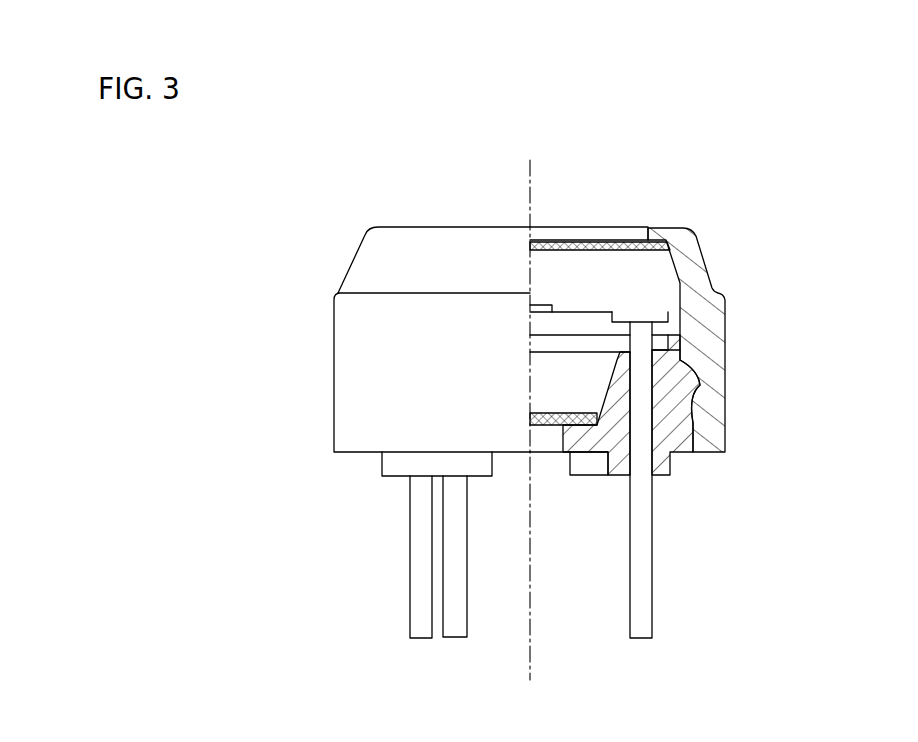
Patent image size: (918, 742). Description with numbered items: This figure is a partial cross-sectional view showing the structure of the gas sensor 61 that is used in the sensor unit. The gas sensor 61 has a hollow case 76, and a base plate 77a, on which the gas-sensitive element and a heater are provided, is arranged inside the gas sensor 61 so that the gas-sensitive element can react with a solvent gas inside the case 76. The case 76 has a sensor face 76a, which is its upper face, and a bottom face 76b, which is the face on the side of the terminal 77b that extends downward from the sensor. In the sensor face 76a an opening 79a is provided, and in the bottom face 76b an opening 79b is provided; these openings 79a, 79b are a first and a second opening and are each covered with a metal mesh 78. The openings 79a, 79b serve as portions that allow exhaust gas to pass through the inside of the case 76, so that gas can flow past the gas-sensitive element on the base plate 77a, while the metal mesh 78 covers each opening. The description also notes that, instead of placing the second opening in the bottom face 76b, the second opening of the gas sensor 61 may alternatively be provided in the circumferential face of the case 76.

The gas sensor 61 is at (697, 213).
The case 76 is at (333, 360).
The sensor face 76a is at (408, 226).
The bottom face 76b is at (347, 455).
The base plate 77a is at (540, 303).
The terminal 77b is at (420, 640).
The metal mesh 78 is at (600, 252).
The opening 79a is at (585, 227).
The opening 79b is at (542, 456).